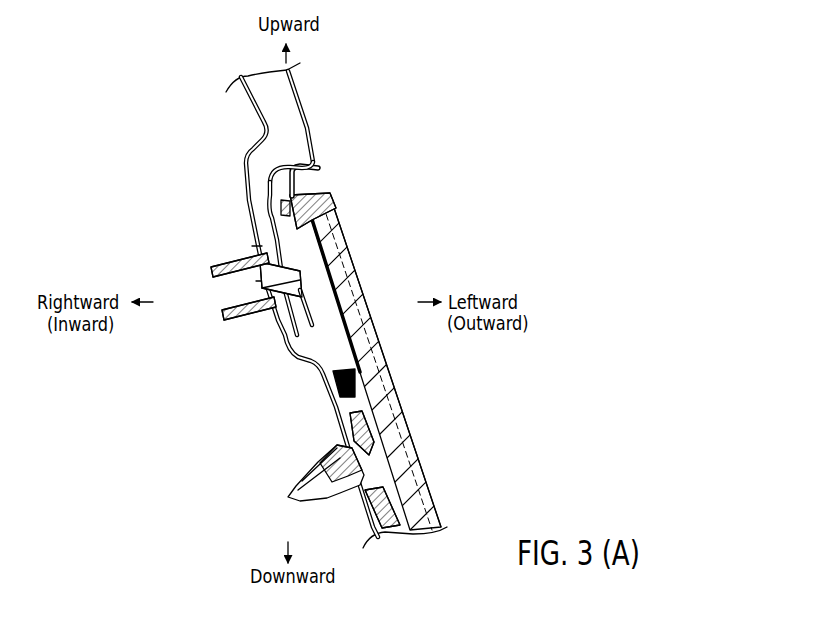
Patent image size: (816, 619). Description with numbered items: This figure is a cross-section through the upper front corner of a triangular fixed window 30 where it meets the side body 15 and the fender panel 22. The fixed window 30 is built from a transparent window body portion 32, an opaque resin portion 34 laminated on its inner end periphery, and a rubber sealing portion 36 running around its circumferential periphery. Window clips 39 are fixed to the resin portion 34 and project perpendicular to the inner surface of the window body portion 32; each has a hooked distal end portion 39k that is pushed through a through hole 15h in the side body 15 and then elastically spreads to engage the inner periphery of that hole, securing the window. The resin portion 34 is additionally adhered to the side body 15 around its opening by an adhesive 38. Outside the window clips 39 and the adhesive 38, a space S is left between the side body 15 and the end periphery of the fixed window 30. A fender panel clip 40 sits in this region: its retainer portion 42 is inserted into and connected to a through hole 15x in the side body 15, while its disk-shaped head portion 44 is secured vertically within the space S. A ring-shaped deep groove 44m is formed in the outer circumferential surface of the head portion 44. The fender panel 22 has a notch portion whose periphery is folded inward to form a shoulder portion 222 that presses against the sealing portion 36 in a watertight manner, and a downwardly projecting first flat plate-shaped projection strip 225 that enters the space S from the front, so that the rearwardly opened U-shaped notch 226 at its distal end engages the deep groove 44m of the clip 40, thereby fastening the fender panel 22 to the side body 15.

The side body 15 is at (240, 150).
The through holes 15x is at (244, 256).
The through holes 15h is at (362, 495).
The fender panel 22 is at (305, 81).
The shoulder portion 222 is at (293, 167).
The first flat plate-shaped projection strip 225 is at (268, 203).
The notch 226 is at (252, 296).
The fixed window 30 is at (398, 382).
The window body portion 32 is at (350, 288).
The resin portion 34 is at (350, 420).
The sealing portion 36 is at (309, 181).
The adhesive 38 is at (332, 380).
The window clips 39 is at (318, 505).
The hooked distal end portions 39k is at (318, 460).
The fender panel clips 40 is at (248, 325).
The retainer portions 42 is at (228, 256).
The disk-shaped head portions 44 is at (262, 272).
The ring-shaped deep groove 44m is at (279, 208).
The spaces S is at (313, 271).